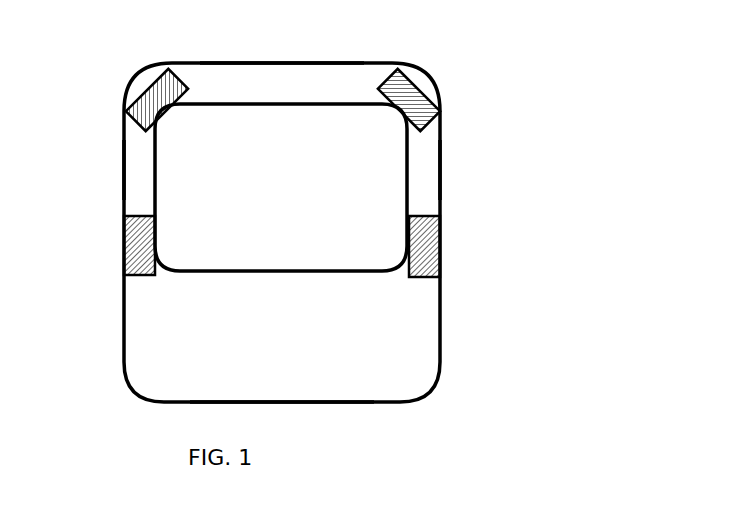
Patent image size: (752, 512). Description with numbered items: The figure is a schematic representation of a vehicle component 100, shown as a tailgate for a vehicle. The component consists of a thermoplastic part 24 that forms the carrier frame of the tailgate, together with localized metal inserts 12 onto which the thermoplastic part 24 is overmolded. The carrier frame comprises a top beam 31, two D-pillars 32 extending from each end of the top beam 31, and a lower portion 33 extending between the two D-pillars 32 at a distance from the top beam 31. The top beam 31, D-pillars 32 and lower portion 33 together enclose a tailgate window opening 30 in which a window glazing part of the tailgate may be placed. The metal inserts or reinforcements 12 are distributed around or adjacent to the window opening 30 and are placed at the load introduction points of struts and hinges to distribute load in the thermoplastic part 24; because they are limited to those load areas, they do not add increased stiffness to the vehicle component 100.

The vehicle component 100 is at (486, 176).
The metal insert 12 is at (132, 105).
The thermoplastic part 24 is at (400, 376).
The tailgate window opening 30 is at (285, 199).
The top beam 31 is at (275, 60).
The D-pillar 32 is at (137, 178).
The lower portion 33 is at (157, 375).